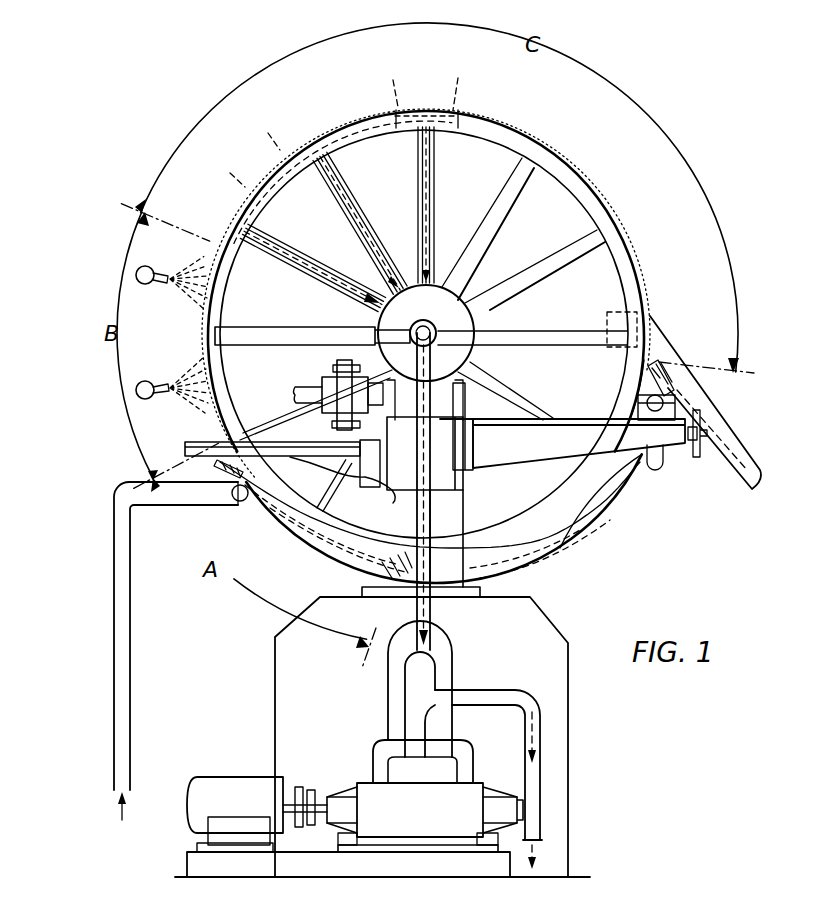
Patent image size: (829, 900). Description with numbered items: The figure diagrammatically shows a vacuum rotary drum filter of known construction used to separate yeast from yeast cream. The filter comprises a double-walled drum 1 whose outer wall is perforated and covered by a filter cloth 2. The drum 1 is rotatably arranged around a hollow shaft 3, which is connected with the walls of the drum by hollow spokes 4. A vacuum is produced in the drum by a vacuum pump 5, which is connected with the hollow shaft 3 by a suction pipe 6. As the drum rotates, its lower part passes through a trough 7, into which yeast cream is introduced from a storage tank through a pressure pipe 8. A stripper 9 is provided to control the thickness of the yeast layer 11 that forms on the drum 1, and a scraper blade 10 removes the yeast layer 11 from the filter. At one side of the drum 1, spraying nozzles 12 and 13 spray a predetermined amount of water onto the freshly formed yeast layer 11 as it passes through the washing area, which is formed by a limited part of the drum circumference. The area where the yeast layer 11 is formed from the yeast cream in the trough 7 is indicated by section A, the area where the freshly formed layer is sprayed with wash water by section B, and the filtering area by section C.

The double-walled drum 1 is at (563, 175).
The filter cloth 2 is at (603, 198).
The hollow shaft 3 is at (497, 324).
The hollow spokes 4 is at (484, 232).
The vacuum pump 5 is at (375, 800).
The suction pipe 6 is at (431, 623).
The trough 7 is at (582, 517).
The pressure pipe 8 is at (131, 683).
The stripper 9 is at (217, 466).
The scraper blade 10 is at (656, 376).
The yeast layer 11 is at (622, 236).
The spraying nozzle 12 is at (138, 392).
The spraying nozzle 13 is at (137, 270).